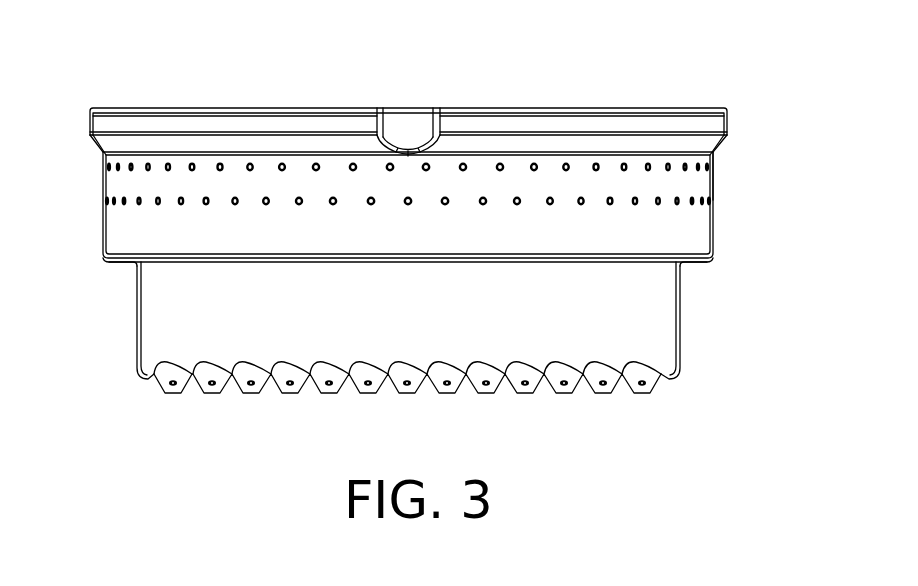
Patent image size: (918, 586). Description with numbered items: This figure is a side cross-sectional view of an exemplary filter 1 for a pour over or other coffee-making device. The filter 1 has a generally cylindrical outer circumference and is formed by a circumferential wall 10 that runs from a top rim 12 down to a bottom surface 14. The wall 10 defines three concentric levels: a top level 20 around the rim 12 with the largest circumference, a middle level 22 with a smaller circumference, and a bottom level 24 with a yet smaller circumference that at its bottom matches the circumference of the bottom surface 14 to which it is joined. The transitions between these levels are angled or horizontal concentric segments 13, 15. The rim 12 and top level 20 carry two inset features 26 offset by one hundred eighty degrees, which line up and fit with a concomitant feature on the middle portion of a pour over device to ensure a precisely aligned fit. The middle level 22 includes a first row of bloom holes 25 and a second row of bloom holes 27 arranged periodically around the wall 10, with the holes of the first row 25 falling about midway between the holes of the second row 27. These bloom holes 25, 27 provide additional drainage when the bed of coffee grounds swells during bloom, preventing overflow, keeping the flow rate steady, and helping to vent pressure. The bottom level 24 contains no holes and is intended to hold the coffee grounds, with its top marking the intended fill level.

The filter 1 is at (719, 74).
The circumferential wall 10 is at (103, 243).
The top rim 12 is at (90, 108).
The transition segment 13 is at (724, 143).
The bottom surface 14 is at (181, 397).
The transition segment 15 is at (701, 261).
The top level 20 is at (75, 108).
The middle level 22 is at (75, 156).
The bottom level 24 is at (75, 262).
The first row of bloom holes 25 is at (713, 163).
The inset feature 26 is at (407, 128).
The second row of bloom holes 27 is at (713, 201).